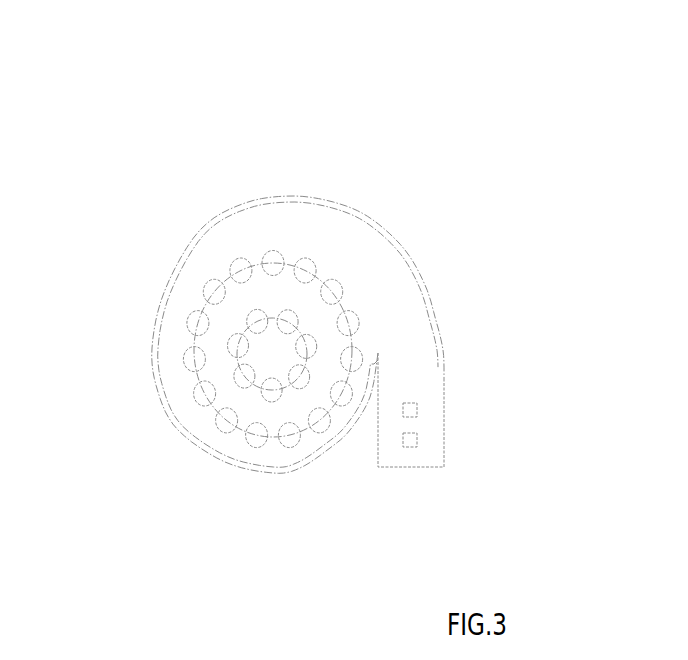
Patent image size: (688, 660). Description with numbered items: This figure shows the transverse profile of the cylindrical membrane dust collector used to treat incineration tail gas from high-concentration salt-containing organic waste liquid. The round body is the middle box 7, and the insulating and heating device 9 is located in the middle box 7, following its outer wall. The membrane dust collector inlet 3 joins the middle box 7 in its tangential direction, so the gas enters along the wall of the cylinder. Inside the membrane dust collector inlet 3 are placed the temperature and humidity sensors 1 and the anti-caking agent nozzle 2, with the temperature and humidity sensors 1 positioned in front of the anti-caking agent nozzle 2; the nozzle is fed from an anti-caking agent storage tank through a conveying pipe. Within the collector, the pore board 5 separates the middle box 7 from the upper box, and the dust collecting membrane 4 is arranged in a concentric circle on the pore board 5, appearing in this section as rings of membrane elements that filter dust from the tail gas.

The temperature and humidity sensors 1 is at (417, 435).
The anti-caking agent nozzle 2 is at (417, 405).
The membrane dust collector inlet 3 is at (418, 468).
The dust collecting membrane 4 is at (240, 267).
The pore board 5 is at (320, 230).
The middle box 7 is at (373, 220).
The insulating and heating device 9 is at (323, 200).